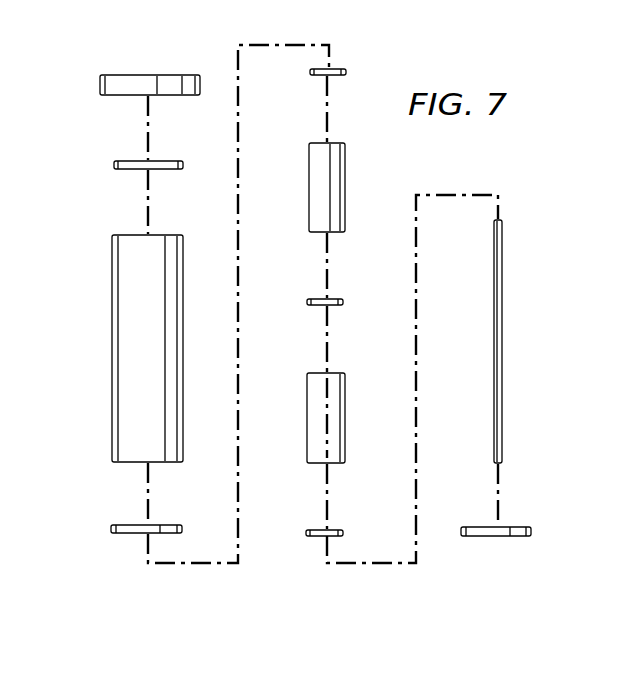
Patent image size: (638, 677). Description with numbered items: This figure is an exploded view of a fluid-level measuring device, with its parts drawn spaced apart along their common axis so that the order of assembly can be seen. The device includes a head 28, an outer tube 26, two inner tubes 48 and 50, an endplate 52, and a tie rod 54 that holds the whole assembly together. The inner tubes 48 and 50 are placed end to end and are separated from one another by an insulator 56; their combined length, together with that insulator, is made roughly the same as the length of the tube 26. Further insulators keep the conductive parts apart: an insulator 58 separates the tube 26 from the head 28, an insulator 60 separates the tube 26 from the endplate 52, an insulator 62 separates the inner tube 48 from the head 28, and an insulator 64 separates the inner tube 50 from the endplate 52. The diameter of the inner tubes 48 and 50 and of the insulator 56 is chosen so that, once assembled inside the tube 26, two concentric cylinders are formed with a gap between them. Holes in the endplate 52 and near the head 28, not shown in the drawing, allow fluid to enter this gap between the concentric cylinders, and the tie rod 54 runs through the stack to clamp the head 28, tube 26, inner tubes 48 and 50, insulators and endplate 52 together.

The tube 26 is at (112, 352).
The head 28 is at (100, 82).
The inner tube 48 is at (346, 186).
The inner tube 50 is at (346, 420).
The endplate 52 is at (503, 538).
The tie rod 54 is at (502, 352).
The insulator 56 is at (340, 298).
The insulator 58 is at (128, 160).
The insulator 60 is at (130, 535).
The insulator 62 is at (338, 68).
The insulator 64 is at (318, 538).